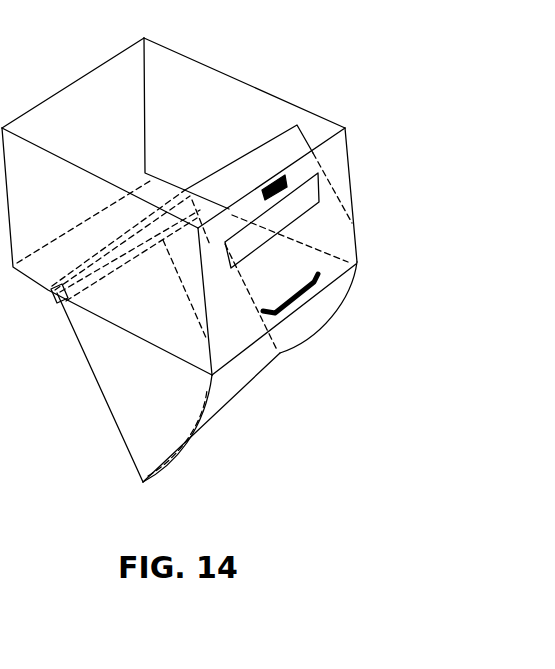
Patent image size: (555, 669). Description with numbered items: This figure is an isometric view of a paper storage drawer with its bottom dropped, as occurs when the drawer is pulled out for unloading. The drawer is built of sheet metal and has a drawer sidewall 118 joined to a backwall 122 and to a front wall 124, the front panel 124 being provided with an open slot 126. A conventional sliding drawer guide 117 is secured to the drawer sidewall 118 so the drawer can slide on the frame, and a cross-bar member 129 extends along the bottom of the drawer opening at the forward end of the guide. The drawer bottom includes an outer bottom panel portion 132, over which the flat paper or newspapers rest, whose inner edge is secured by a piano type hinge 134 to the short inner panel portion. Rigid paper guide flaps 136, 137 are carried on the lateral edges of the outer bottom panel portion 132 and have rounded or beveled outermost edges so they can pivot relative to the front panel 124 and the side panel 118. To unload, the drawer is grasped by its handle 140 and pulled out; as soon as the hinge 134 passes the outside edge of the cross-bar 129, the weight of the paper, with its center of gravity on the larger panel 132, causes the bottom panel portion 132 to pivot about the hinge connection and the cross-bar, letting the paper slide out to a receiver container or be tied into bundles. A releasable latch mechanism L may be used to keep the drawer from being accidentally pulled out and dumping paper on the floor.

The sliding drawer guide 117 is at (249, 83).
The drawer sidewall 118 is at (58, 155).
The backwall 122 is at (49, 97).
The front wall 124 is at (330, 157).
The open slot 126 is at (288, 208).
The cross-bar member 129 is at (48, 292).
The outer bottom panel portion 132 is at (252, 365).
The piano type hinge 134 is at (170, 188).
The rigid paper guide flap 136 is at (133, 413).
The rigid paper guide flap 137 is at (320, 313).
The handle 140 is at (322, 292).
The releasable latch mechanism L is at (285, 178).